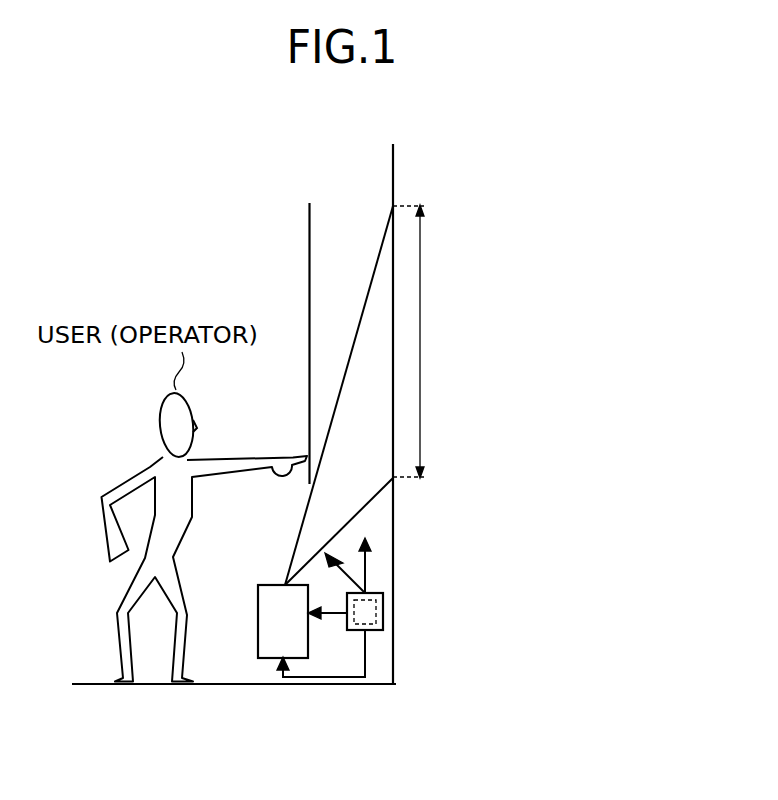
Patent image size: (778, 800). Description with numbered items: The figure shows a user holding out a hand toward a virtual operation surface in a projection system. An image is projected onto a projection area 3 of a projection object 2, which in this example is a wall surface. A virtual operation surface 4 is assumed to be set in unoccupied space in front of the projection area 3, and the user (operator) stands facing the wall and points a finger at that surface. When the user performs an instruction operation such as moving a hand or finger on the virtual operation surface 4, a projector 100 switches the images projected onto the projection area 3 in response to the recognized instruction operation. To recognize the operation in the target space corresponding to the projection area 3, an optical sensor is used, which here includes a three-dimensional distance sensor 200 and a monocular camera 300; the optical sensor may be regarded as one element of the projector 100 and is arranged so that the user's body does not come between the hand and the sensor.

The projection object 2 is at (393, 170).
The projection area 3 is at (487, 341).
The virtual operation surface 4 is at (309, 216).
The projector 100 is at (258, 652).
The three-dimensional distance sensor 200 is at (383, 598).
The camera 300 is at (383, 622).